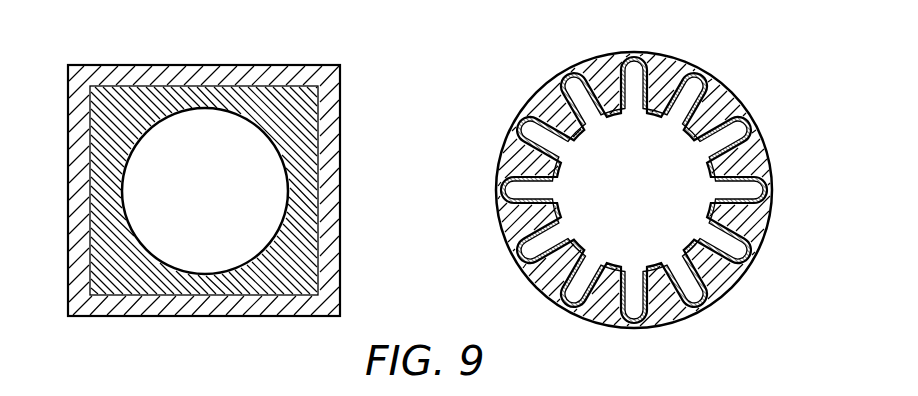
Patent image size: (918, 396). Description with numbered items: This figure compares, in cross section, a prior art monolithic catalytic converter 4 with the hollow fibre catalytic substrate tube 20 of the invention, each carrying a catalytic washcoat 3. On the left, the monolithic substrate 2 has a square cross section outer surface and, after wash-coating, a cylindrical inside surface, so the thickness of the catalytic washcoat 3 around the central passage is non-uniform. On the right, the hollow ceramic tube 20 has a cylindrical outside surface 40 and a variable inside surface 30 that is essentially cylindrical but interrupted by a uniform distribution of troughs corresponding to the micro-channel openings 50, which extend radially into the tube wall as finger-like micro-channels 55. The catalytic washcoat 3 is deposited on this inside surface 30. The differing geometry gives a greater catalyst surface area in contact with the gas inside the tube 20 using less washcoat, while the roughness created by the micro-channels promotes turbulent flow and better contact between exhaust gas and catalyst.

The prior art monolithic catalytic converter 4 is at (400, 167).
The catalytic washcoat 3 is at (334, 139).
The ceramic substrate 2 is at (307, 238).
The micro-structured hollow ceramic tube 20 is at (634, 175).
The inside surface 30 is at (659, 72).
The outside surface 40 is at (752, 258).
The micro-channel openings 50 is at (700, 230).
The micro-channels 55 is at (765, 135).